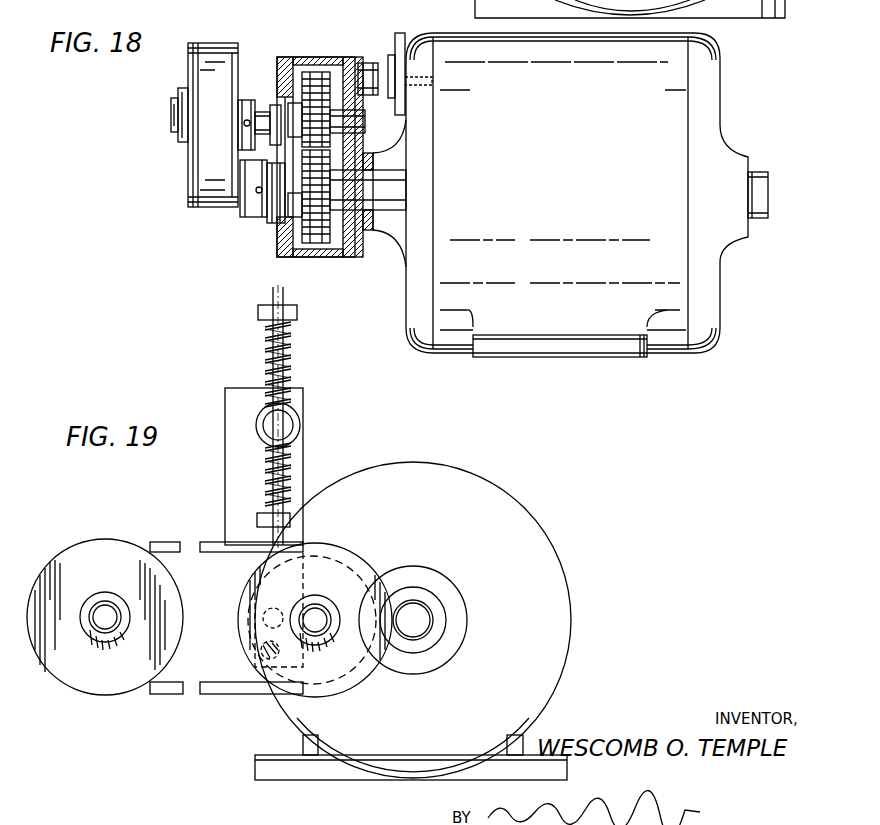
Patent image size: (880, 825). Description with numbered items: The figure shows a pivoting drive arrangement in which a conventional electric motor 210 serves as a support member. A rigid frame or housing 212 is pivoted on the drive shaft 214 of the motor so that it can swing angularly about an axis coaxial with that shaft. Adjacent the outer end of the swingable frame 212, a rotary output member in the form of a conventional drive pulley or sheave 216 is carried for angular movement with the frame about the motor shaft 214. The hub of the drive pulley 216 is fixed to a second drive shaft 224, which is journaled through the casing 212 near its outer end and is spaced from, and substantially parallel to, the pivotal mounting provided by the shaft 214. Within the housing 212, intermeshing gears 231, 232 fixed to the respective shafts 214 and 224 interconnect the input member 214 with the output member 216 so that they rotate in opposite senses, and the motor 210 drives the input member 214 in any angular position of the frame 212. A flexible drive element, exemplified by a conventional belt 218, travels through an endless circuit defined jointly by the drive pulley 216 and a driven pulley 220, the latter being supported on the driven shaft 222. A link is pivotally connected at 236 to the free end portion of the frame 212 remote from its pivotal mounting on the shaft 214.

In FIG. 18, the electric motor 210 is at (578, 203).
In FIG. 18, the rigid frame or housing 212 is at (317, 57).
In FIG. 19, the rigid frame or housing 212 is at (423, 563).
In FIG. 18, the drive shaft 214 is at (360, 192).
In FIG. 19, the drive shaft 214 is at (423, 615).
In FIG. 18, the drive pulley or sheave 216 is at (187, 82).
In FIG. 19, the drive pulley or sheave 216 is at (333, 547).
In FIG. 18, the belt 218 is at (215, 43).
In FIG. 19, the belt 218 is at (163, 543).
In FIG. 19, the driven pulley 220 is at (108, 543).
In FIG. 19, the driven shaft 222 is at (107, 613).
In FIG. 18, the drive shaft 224 is at (263, 110).
In FIG. 19, the drive shaft 224 is at (320, 615).
In FIG. 18, the gear 231 is at (318, 243).
In FIG. 18, the gear 232 is at (323, 77).
In FIG. 18, the pivotal connection 236 is at (370, 64).